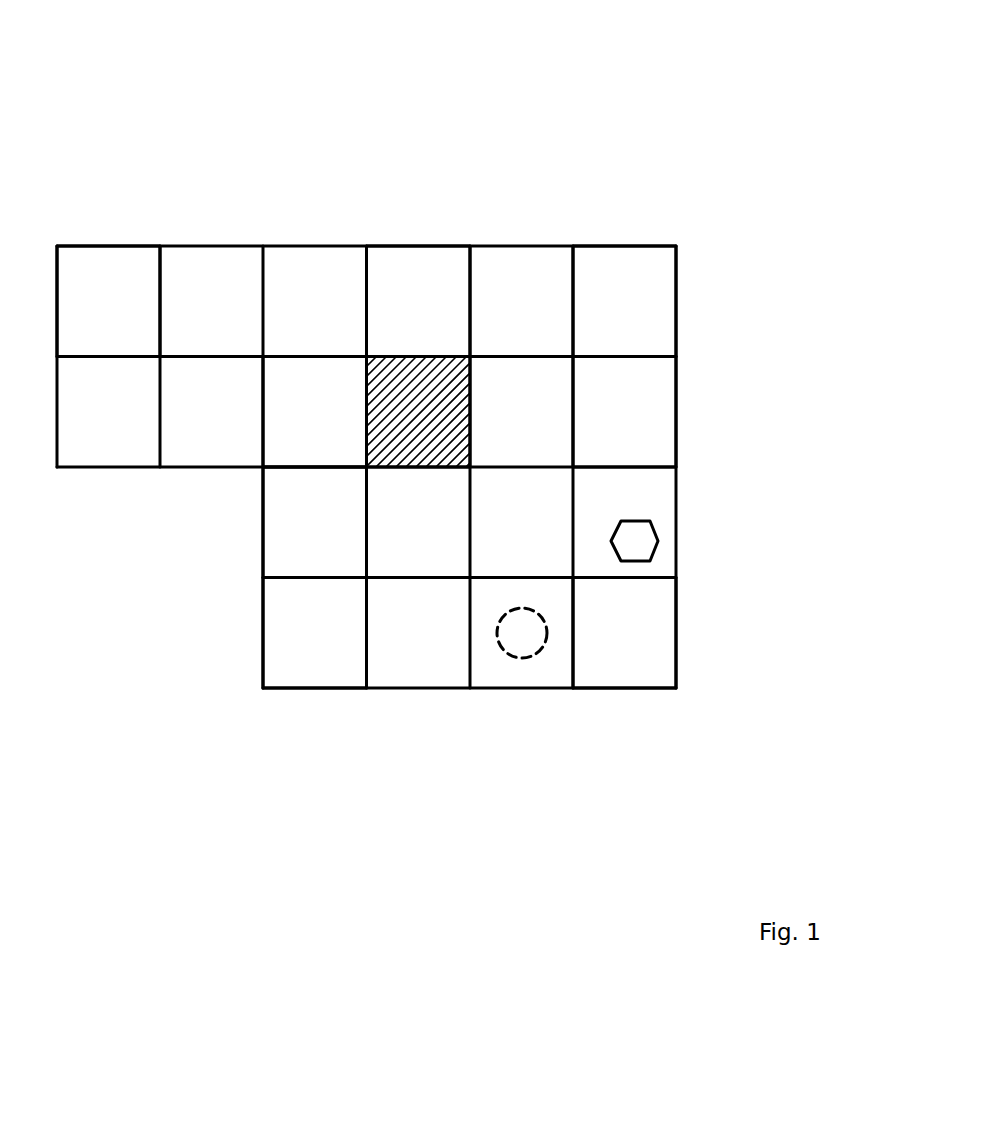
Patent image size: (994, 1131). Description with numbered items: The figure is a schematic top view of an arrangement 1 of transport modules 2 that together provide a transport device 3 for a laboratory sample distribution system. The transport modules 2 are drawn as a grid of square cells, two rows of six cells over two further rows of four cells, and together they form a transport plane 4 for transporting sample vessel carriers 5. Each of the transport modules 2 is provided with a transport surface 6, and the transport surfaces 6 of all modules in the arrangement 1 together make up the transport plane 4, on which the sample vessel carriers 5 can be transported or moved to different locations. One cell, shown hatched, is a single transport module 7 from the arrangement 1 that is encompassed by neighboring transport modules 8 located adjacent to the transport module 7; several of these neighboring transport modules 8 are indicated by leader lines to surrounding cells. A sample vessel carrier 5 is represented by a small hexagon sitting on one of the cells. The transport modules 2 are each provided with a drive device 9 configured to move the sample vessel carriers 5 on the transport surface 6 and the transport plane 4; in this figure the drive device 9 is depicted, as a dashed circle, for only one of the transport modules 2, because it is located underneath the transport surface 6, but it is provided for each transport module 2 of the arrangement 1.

The arrangement 1 is at (115, 263).
The transport module 2 is at (628, 265).
The transport device 3 is at (697, 95).
The transport plane 4 is at (308, 658).
The sample vessel carrier 5 is at (645, 538).
The transport surface 6 is at (658, 638).
The single transport module 7 is at (438, 361).
The neighboring transport module 8 is at (300, 383).
The drive device 9 is at (522, 637).